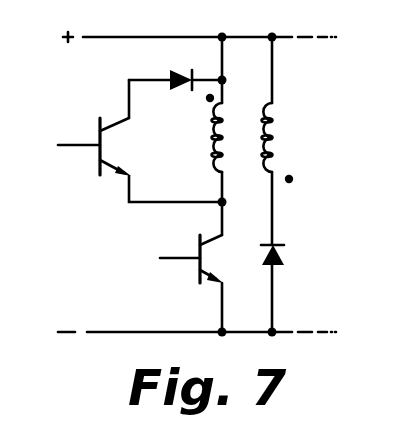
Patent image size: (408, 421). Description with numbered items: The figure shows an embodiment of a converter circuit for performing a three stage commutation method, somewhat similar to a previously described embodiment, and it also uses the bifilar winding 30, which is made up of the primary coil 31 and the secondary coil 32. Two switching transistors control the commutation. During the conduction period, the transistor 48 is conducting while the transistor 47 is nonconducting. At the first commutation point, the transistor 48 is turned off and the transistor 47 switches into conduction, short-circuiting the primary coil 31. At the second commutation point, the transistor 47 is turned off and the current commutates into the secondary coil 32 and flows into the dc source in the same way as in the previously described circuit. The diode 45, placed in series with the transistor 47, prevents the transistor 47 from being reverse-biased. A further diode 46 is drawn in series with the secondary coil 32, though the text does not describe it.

The bifilar winding 30 is at (258, 93).
The primary coil 31 is at (215, 155).
The secondary coil 32 is at (275, 155).
The diode 45 is at (172, 72).
The diode 46 is at (282, 255).
The transistor 47 is at (100, 141).
The transistor 48 is at (198, 272).